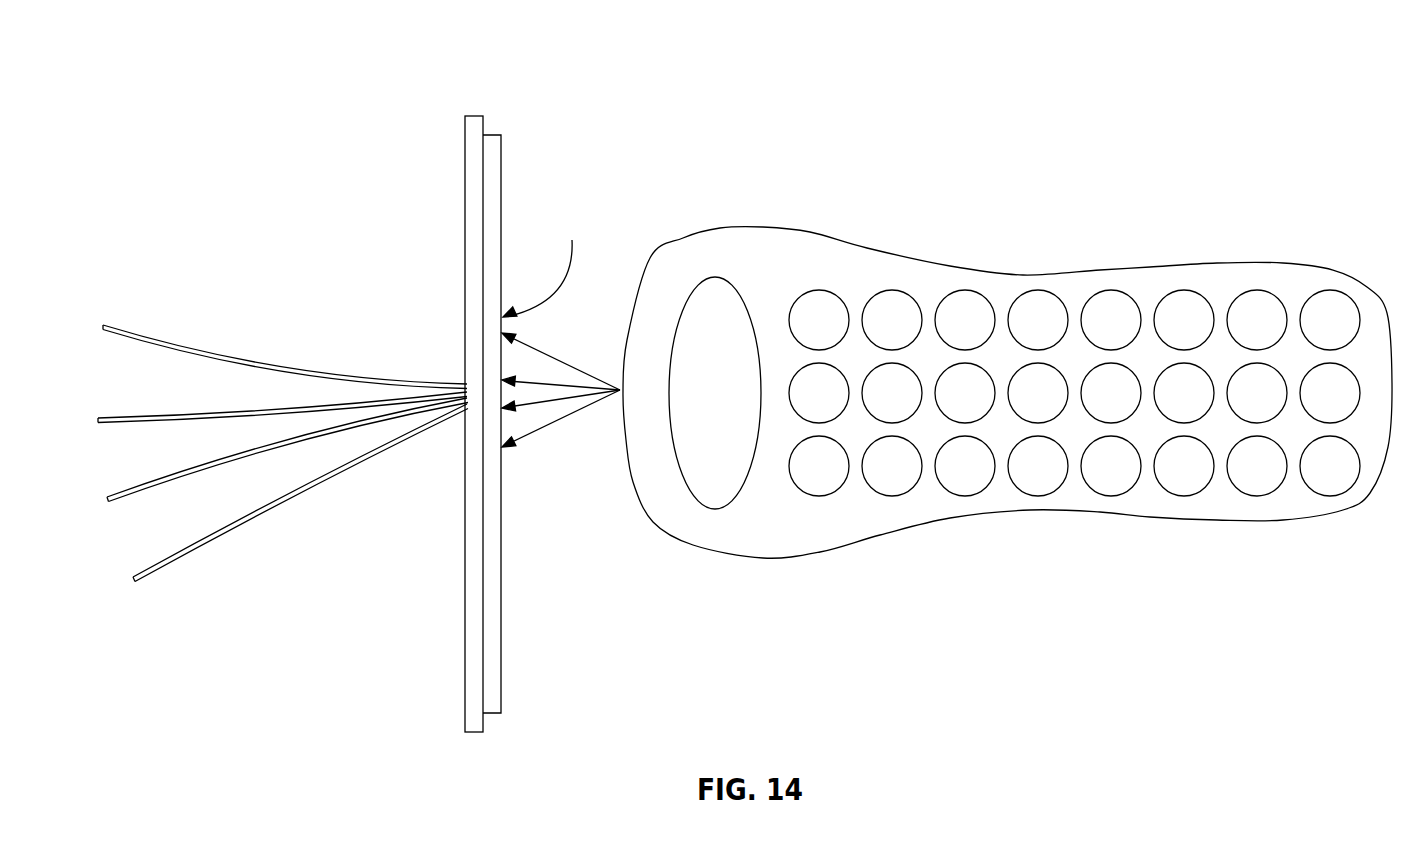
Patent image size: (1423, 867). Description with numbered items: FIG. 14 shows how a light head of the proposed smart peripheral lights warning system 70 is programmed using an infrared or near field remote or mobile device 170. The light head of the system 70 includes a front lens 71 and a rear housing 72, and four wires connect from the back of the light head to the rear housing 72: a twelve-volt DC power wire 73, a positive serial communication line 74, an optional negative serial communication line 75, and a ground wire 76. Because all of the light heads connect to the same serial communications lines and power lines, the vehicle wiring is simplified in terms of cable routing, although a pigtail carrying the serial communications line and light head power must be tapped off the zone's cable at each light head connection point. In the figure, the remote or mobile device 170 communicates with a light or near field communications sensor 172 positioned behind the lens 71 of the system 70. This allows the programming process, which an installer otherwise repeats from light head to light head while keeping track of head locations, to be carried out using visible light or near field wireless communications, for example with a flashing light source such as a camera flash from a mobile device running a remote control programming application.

The smart peripheral lights warning system 70 is at (501, 385).
The front lens 71 is at (500, 587).
The rear housing 72 is at (471, 557).
The 12 VDC power wire 73 is at (156, 333).
The positive serial communication line 74 is at (131, 421).
The optional negative serial communication line 75 is at (139, 481).
The ground wire 76 is at (150, 560).
The infrared or near field remote or mobile device 170 is at (1295, 220).
The light or near field communications sensor 172 is at (553, 262).